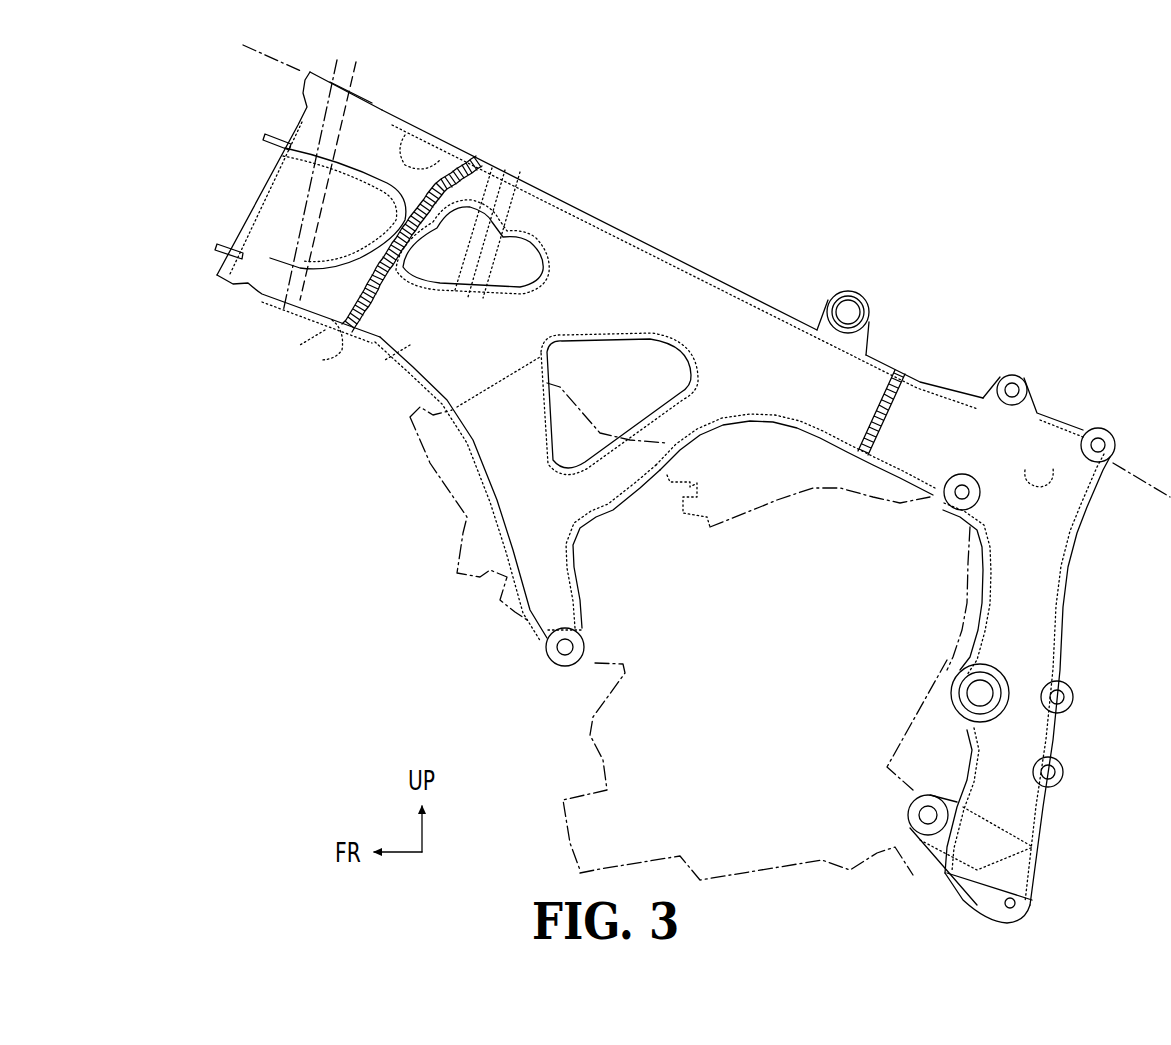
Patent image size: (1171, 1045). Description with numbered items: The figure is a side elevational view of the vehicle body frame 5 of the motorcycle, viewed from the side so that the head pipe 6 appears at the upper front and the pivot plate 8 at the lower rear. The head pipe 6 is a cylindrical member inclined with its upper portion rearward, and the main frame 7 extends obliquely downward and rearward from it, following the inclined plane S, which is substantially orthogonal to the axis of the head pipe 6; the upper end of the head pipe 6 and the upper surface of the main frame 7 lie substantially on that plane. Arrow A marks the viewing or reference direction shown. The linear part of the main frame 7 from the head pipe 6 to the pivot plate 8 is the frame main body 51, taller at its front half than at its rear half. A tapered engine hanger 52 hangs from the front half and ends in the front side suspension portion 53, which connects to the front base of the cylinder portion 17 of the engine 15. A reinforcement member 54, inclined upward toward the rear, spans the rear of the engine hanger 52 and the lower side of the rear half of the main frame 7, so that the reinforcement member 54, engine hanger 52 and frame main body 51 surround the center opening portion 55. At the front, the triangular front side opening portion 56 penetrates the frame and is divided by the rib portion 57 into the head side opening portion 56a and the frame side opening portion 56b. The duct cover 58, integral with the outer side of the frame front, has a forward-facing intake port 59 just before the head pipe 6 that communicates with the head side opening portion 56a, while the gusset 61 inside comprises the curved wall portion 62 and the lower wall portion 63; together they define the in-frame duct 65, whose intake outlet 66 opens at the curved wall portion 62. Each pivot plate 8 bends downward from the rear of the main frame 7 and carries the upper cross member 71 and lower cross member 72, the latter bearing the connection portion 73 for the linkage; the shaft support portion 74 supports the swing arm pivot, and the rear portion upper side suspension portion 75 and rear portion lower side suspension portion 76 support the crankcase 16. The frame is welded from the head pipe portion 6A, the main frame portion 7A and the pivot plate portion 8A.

The vehicle body frame 5 is at (821, 222).
The head pipe 6 is at (293, 119).
The head pipe portion 6A is at (301, 320).
The main frame 7 is at (659, 240).
The main frame portion 7A is at (798, 434).
The pivot plate 8 is at (1080, 580).
The pivot plate portion 8A is at (968, 580).
The engine 15 is at (590, 744).
The crankcase 16 is at (900, 856).
The cylinder portion 17 is at (510, 612).
The frame main body 51 is at (712, 272).
The engine hanger 52 is at (499, 514).
The front side suspension portion 53 is at (548, 654).
The reinforcement member 54 is at (632, 496).
The center opening portion 55 is at (644, 426).
The front side opening portion 56 is at (393, 478).
The head side opening portion 56a is at (330, 325).
The frame side opening portion 56b is at (413, 347).
The rib portion 57 is at (478, 202).
The duct cover 58 is at (232, 282).
The intake port 59 is at (240, 229).
The gusset 61 is at (384, 137).
The curved wall portion 62 is at (420, 137).
The lower wall portion 63 is at (336, 332).
The in-frame duct 65 is at (277, 272).
The intake outlet 66 is at (549, 259).
The upper cross member 71 is at (1068, 450).
The lower cross member 72 is at (1050, 822).
The connection portion 73 is at (1035, 898).
The shaft support portion 74 is at (952, 670).
The rear portion upper side suspension portion 75 is at (943, 513).
The rear portion lower side suspension portion 76 is at (907, 812).
The inclined plane S is at (314, 171).
The arrow direction A is at (408, 100).